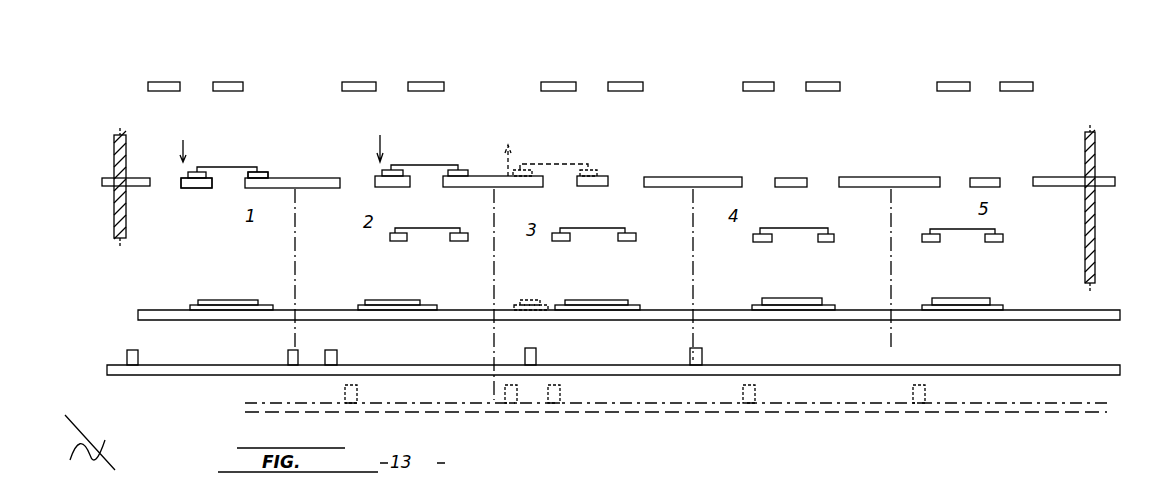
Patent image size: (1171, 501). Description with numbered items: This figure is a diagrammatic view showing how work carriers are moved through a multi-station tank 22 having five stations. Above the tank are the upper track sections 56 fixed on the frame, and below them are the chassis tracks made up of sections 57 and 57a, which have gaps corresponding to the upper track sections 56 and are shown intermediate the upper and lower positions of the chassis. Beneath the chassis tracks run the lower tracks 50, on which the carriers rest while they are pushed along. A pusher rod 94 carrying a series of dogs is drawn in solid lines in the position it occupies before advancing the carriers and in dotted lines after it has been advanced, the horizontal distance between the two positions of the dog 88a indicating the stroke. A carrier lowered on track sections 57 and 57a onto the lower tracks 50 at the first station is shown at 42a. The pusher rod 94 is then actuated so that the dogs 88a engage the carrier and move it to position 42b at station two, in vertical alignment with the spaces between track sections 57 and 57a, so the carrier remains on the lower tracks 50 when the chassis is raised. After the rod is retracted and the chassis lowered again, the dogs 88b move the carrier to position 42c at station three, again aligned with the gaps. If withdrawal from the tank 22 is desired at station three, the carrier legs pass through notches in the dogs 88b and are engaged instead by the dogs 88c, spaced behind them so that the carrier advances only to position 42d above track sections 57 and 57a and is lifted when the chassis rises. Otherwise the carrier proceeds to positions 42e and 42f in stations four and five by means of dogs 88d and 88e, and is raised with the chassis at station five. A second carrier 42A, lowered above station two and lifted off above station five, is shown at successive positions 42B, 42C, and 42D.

The multi-station tank 22 is at (1097, 206).
The lower tracks 50 is at (857, 313).
The upper track sections 56 is at (228, 82).
The chassis track section 57 is at (186, 189).
The chassis track section 57a is at (283, 177).
The work carrier position 42a is at (212, 160).
The work carrier 42A is at (440, 165).
The work carrier position 42b is at (390, 300).
The work carrier position 42B is at (615, 227).
The work carrier position 42c is at (610, 300).
The work carrier position 42C is at (815, 227).
The work carrier position 42d is at (548, 163).
The work carrier position 42D is at (990, 230).
The work carrier position 42e is at (802, 281).
The work carrier position 42f is at (990, 298).
The dogs 88a is at (138, 360).
The dogs 88b is at (337, 360).
The dogs 88c is at (288, 355).
The dogs 88d is at (536, 358).
The dogs 88e is at (702, 358).
The pusher rod 94 is at (644, 364).